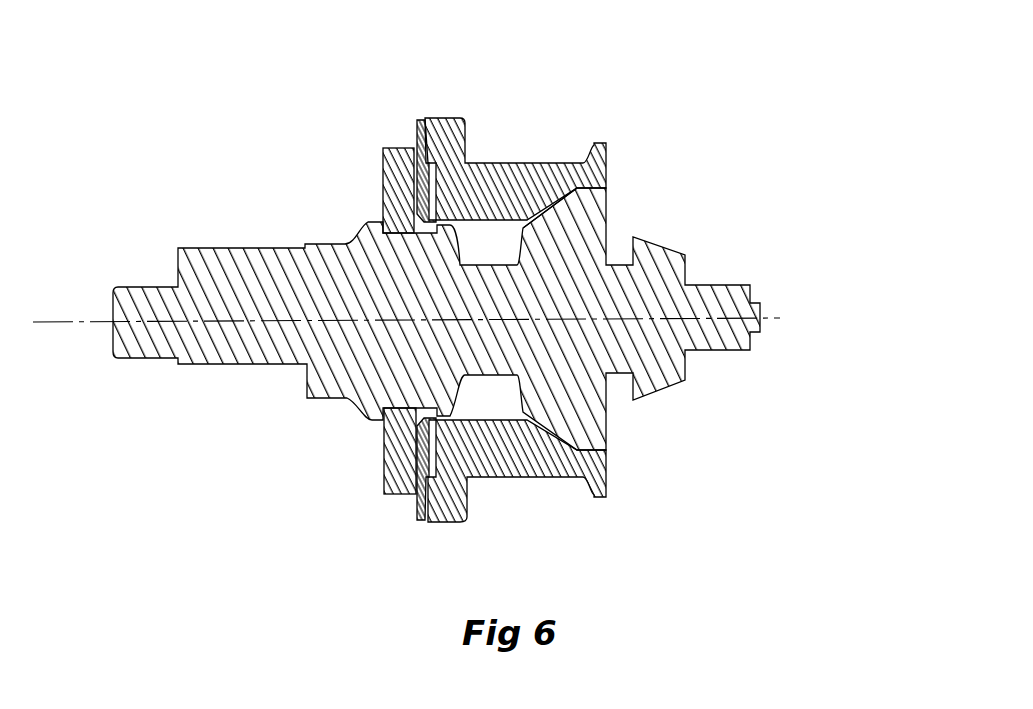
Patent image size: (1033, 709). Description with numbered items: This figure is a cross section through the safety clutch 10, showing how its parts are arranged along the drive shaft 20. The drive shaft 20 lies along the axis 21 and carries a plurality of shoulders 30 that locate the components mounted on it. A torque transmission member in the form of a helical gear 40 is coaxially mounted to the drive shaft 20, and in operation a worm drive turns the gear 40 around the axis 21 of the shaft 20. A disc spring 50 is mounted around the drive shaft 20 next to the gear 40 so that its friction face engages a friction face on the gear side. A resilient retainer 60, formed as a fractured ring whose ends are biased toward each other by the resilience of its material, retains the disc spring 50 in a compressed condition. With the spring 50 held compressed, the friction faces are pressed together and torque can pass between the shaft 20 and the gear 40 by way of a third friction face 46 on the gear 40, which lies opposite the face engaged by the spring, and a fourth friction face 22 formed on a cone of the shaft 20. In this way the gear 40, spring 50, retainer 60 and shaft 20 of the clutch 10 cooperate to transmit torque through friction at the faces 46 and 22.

The safety clutch 10 is at (675, 172).
The drive shaft 20 is at (150, 287).
The axis 21 is at (72, 322).
The fourth friction face 22 is at (553, 223).
The shoulders 30 is at (353, 238).
The helical gear 40 is at (512, 458).
The third friction face 46 is at (545, 192).
The disc spring 50 is at (417, 141).
The resilient retainer 60 is at (398, 452).